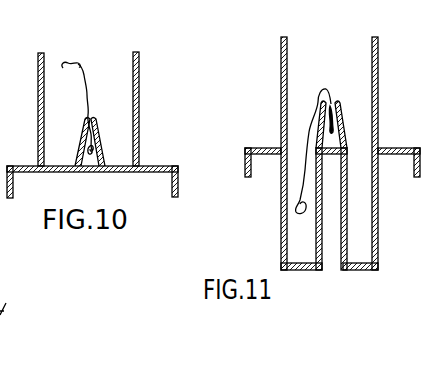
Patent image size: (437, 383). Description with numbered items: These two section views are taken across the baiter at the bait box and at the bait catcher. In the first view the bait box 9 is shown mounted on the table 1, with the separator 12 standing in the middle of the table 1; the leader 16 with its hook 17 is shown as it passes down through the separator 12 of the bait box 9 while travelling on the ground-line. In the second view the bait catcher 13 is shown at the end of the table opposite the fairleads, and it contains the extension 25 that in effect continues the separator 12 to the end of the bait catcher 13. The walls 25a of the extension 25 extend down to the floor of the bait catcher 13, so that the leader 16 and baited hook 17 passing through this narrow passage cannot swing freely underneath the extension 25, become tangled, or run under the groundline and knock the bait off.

In FIG. 10, the table 1 is at (160, 168).
In FIG. 11, the table 1 is at (245, 162).
In FIG. 10, the bait box 9 is at (139, 83).
In FIG. 10, the separator 12 is at (97, 128).
In FIG. 11, the bait catcher 13 is at (378, 87).
In FIG. 10, the leader 16 is at (88, 103).
In FIG. 11, the leader 16 is at (301, 120).
In FIG. 10, the hook 17 is at (78, 63).
In FIG. 11, the extension 25 is at (342, 110).
In FIG. 11, the walls 25a is at (348, 212).